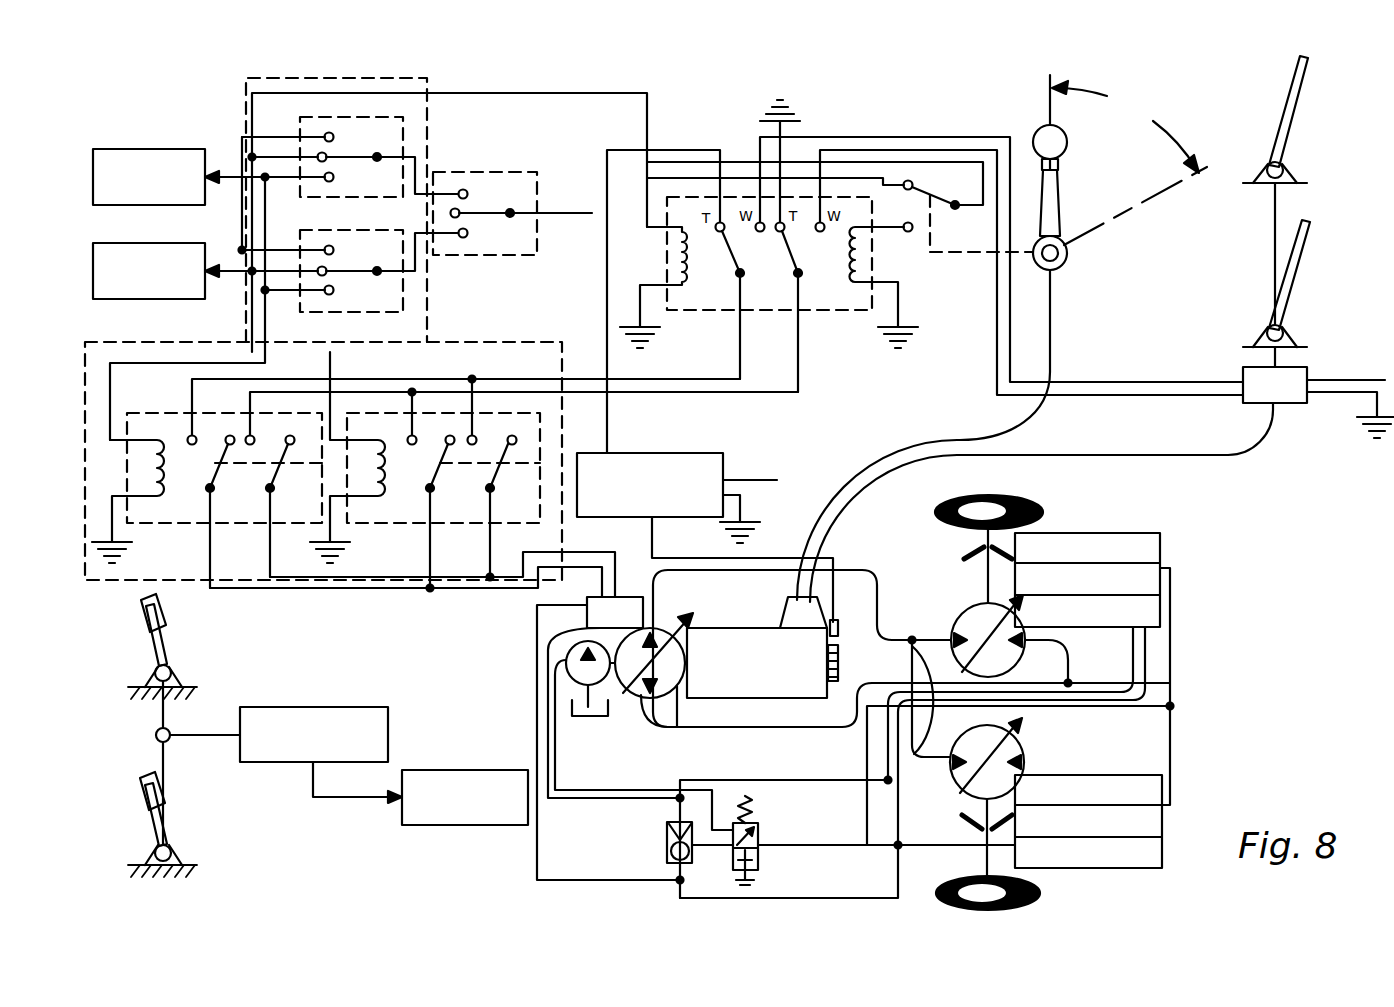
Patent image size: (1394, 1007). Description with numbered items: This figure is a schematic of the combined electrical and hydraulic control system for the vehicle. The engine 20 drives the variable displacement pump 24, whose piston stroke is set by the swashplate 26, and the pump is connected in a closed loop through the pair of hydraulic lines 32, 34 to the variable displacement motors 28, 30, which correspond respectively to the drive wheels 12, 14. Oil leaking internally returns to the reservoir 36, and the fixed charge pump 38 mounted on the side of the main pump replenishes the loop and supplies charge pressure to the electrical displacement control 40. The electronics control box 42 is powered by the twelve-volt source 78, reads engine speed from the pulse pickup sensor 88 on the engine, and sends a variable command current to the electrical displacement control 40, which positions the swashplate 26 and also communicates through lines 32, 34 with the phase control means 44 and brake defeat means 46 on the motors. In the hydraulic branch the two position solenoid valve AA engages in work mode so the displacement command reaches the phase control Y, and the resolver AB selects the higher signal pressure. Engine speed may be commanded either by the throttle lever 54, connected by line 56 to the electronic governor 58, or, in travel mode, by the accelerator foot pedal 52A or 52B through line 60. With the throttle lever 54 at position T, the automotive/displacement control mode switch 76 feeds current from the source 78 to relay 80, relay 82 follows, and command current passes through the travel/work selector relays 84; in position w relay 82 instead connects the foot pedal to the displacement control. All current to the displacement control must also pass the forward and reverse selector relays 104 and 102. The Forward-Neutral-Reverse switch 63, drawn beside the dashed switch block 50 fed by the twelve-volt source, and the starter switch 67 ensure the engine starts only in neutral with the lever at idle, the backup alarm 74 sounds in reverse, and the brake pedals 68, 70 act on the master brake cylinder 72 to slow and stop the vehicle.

The wheel 12 is at (1046, 520).
The wheel 14 is at (1042, 893).
The engine 20 is at (813, 698).
The variable displacement pump 24 is at (630, 713).
The swashplate 26 is at (665, 726).
The variable displacement motor 28 is at (963, 613).
The variable displacement motor 30 is at (962, 792).
The hydraulic line 32 is at (746, 571).
The hydraulic line 34 is at (788, 728).
The reservoir 36 is at (572, 719).
The charge pump 38 is at (555, 652).
The electrical displacement control 40 is at (548, 627).
The electronics control box 42 is at (697, 453).
The phase control means 44 is at (1155, 580).
The brake defeat means 46 is at (1130, 628).
The direction switch 50 is at (480, 170).
The accelerator foot pedal 52A is at (1308, 76).
The accelerator foot pedal 52B is at (1309, 236).
The throttle lever 54 is at (1068, 147).
The line 56 is at (1052, 345).
The electronic governor 58 is at (788, 608).
The line 60 is at (1015, 458).
The Forward-Neutral-Reverse switch 63 is at (240, 86).
The starter switch 67 is at (158, 299).
The brake pedal 68 is at (160, 612).
The brake pedal 70 is at (162, 791).
The master brake cylinder 72 is at (292, 707).
The backup alarm 74 is at (158, 149).
The automotive/displacement control mode switch 76 is at (942, 265).
The 12-volt source 78 is at (592, 197).
The relay 80 is at (870, 258).
The relay 82 is at (660, 253).
The travel/work selector relays 84 is at (842, 192).
The pulse pickup sensor 88 is at (838, 623).
The reverse relays 102 is at (189, 497).
The forward relays 104 is at (393, 588).
The two position solenoid valve AA is at (760, 863).
The resolver AB is at (667, 835).
The phase control Y is at (1143, 533).